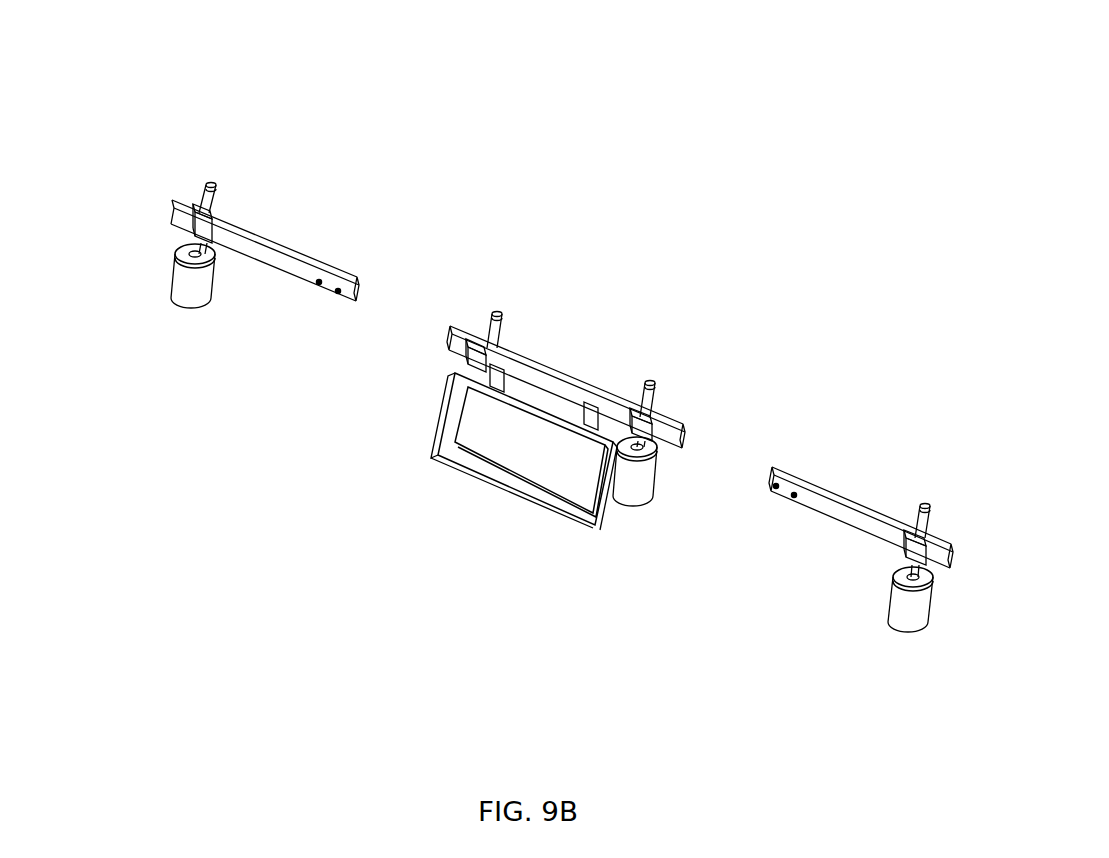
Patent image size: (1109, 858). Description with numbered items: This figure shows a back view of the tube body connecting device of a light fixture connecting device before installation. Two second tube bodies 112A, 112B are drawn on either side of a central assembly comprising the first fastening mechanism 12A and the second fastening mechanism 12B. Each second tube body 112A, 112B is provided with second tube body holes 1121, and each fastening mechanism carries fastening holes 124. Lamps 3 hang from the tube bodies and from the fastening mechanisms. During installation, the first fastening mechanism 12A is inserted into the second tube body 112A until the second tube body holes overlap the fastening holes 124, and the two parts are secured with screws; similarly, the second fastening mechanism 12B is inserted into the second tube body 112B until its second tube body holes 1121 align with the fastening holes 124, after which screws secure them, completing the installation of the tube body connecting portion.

The second tube body 112A is at (295, 193).
The second tube body 112B is at (877, 457).
The second tube body holes 1121 is at (257, 331).
The first fastening mechanism 12A is at (532, 353).
The second fastening mechanism 12B is at (704, 390).
The fastening holes 124 is at (473, 440).
The lamp 3 is at (500, 507).